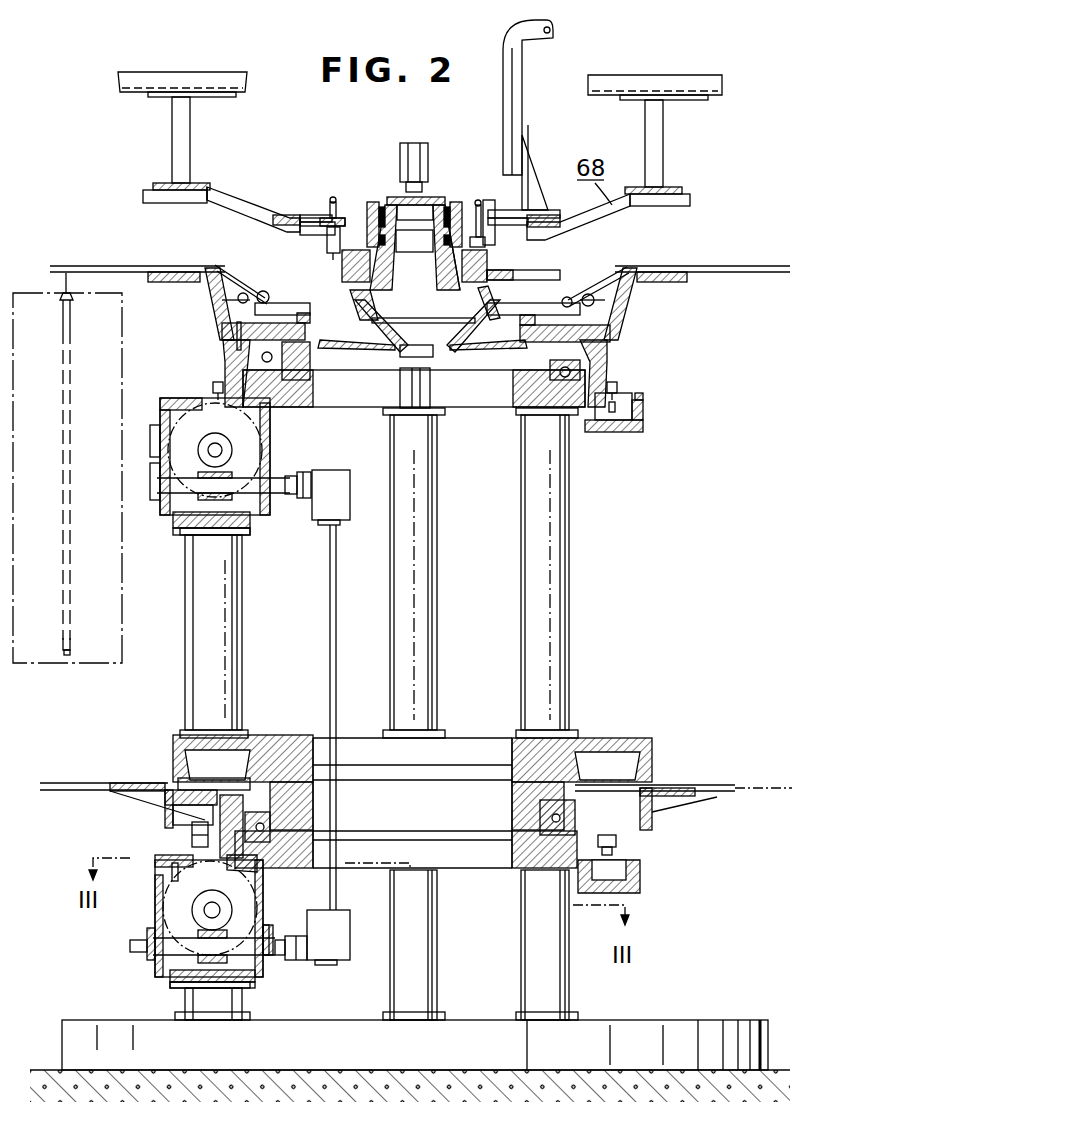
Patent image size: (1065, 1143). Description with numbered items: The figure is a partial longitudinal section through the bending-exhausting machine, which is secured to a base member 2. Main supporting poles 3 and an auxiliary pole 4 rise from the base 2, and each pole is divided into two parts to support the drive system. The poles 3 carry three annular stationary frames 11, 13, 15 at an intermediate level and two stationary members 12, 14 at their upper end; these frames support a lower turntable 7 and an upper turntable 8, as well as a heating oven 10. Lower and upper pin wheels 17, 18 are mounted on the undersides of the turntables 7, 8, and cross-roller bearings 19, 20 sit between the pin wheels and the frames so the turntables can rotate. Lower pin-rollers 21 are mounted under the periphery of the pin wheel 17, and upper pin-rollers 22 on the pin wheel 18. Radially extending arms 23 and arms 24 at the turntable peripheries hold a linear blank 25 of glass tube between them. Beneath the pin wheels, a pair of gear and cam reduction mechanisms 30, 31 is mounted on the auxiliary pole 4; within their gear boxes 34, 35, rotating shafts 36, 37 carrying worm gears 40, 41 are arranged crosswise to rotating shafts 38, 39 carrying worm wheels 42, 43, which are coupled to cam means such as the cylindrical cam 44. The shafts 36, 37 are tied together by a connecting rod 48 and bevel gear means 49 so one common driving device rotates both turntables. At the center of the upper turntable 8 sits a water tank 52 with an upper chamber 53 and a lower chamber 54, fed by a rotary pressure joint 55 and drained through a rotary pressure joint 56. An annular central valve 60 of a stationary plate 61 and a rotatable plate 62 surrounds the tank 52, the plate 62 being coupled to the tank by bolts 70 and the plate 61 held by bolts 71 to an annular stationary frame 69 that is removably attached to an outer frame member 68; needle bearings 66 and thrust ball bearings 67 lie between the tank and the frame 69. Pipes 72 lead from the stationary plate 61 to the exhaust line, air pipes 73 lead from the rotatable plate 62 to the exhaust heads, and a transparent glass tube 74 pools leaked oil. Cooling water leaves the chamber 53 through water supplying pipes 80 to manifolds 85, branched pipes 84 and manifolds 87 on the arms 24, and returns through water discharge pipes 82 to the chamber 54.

The base member 2 is at (465, 1028).
The main supporting poles 3 is at (438, 512).
The auxiliary pole 4 is at (242, 622).
The lower turntable 7 is at (162, 790).
The upper turntable 8 is at (212, 300).
The heating oven 10 is at (122, 348).
The annular stationary frame 11 is at (313, 853).
The stationary member 12 is at (314, 390).
The annular stationary frame 13 is at (295, 803).
The stationary member 14 is at (322, 354).
The annular stationary frame 15 is at (296, 738).
The lower pin wheel 17 is at (192, 830).
The upper pin wheel 18 is at (213, 385).
The cross-roller bearing 19 is at (255, 812).
The cross-roller bearing 20 is at (224, 352).
The lower pin-rollers 21 is at (258, 868).
The upper pin-rollers 22 is at (182, 410).
The arms 23 is at (78, 783).
The arms 24 is at (80, 266).
The linear blank 25 is at (72, 500).
The gear and cam reduction mechanism 30 is at (262, 890).
The gear and cam reduction mechanism 31 is at (266, 432).
The gear box 34 is at (150, 952).
The gear box 35 is at (165, 478).
The rotating shaft 36 is at (172, 982).
The rotating shaft 37 is at (262, 492).
The rotating shaft 38 is at (192, 910).
The rotating shaft 39 is at (232, 452).
The worm gear 40 is at (262, 968).
The worm gear 41 is at (182, 515).
The worm wheel 42 is at (190, 920).
The worm wheel 43 is at (158, 445).
The cylindrical cam 44 is at (175, 872).
The connecting rod 48 is at (336, 608).
The bevel gear means 49 is at (348, 490).
The water tank 52 is at (398, 195).
The upper chamber 53 is at (438, 195).
The lower chamber 54 is at (398, 358).
The rotary pressure joint 55 is at (414, 143).
The rotary pressure joint 56 is at (414, 410).
The central valve 60 is at (318, 243).
The stationary plate 61 is at (336, 215).
The rotatable plate 62 is at (462, 268).
The needle bearings 66 is at (370, 195).
The thrust ball bearings 67 is at (414, 242).
The outer frame member 68 is at (240, 192).
The annular stationary frame 69 is at (372, 205).
The bolts 70 is at (352, 305).
The bolts 71 is at (330, 215).
The pipe 72 is at (470, 215).
The air pipe 73 is at (520, 278).
The transparent glass tube 74 is at (492, 300).
The water supplying pipe 80 is at (285, 294).
The water discharge pipe 82 is at (368, 332).
The branched pipe 84 is at (423, 255).
The manifold 85 is at (250, 283).
The manifold 87 is at (225, 320).